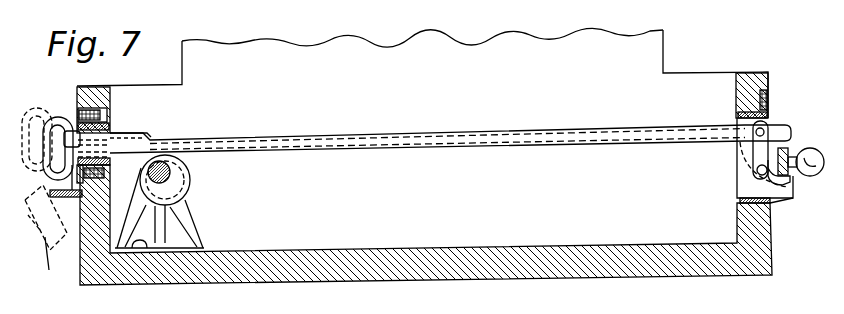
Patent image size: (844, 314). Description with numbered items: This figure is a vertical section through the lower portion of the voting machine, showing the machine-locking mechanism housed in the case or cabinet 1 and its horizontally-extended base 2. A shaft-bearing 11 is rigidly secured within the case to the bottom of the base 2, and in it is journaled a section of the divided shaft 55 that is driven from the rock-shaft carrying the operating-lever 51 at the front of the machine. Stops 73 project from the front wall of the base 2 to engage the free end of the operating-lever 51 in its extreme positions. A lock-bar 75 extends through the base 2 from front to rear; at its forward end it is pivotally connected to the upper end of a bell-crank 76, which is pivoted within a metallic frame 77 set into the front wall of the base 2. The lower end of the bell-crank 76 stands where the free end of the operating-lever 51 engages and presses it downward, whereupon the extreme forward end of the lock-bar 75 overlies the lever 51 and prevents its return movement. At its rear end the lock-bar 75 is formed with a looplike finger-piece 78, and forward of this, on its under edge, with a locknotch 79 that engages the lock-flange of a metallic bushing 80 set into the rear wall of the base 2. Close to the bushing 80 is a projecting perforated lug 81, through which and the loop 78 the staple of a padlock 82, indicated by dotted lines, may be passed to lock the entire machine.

The case or cabinet 1 is at (393, 47).
The base 2 is at (766, 256).
The shaft-bearing 11 is at (190, 223).
The operating-lever 51 is at (785, 150).
The divided shaft 55 is at (165, 172).
The stop 73 is at (782, 198).
The lock-bar 75 is at (473, 140).
The bell-crank 76 is at (757, 152).
The metallic frame 77 is at (742, 192).
The looplike finger-piece 78 is at (58, 118).
The locknotch 79 is at (88, 153).
The metallic bushing 80 is at (110, 170).
The perforated lug 81 is at (47, 233).
The padlock 82 is at (49, 270).